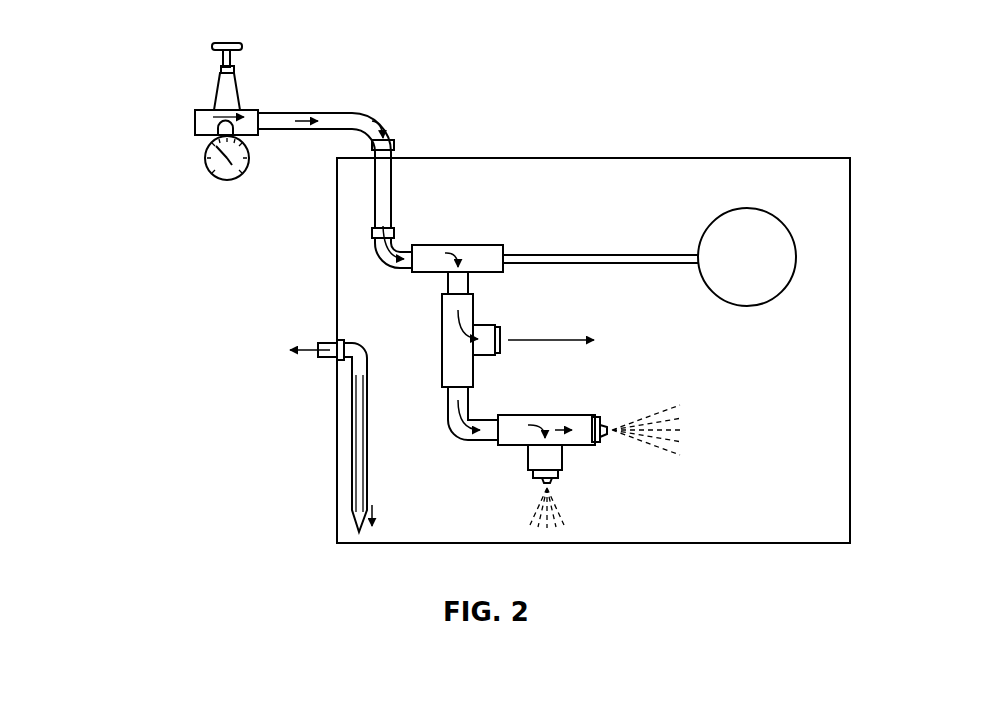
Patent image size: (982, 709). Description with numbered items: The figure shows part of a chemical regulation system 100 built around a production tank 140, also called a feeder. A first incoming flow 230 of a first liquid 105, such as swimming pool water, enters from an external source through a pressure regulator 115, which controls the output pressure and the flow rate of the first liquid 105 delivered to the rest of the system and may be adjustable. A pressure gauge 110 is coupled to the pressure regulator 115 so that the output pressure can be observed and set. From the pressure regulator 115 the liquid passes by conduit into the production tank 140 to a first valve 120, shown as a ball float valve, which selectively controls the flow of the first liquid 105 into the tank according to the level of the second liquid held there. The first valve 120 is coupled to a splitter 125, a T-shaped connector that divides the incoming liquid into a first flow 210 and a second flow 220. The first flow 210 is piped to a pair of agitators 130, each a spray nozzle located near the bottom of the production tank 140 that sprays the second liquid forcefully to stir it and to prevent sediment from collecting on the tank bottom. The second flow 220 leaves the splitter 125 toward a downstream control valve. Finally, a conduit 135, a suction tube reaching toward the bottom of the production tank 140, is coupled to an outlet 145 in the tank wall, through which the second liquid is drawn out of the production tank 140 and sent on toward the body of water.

The chemical regulation system 100 is at (598, 55).
The first liquid 105 is at (190, 121).
The pressure gauge 110 is at (207, 172).
The pressure regulator 115 is at (217, 43).
The first valve 120 is at (484, 245).
The splitter 125 is at (442, 328).
The agitators 130 is at (597, 414).
The conduit 135 is at (365, 427).
The production tank 140 is at (337, 478).
The outlet 145 is at (298, 342).
The first flow 210 is at (458, 407).
The second flow 220 is at (458, 324).
The first incoming flow 230 is at (158, 115).